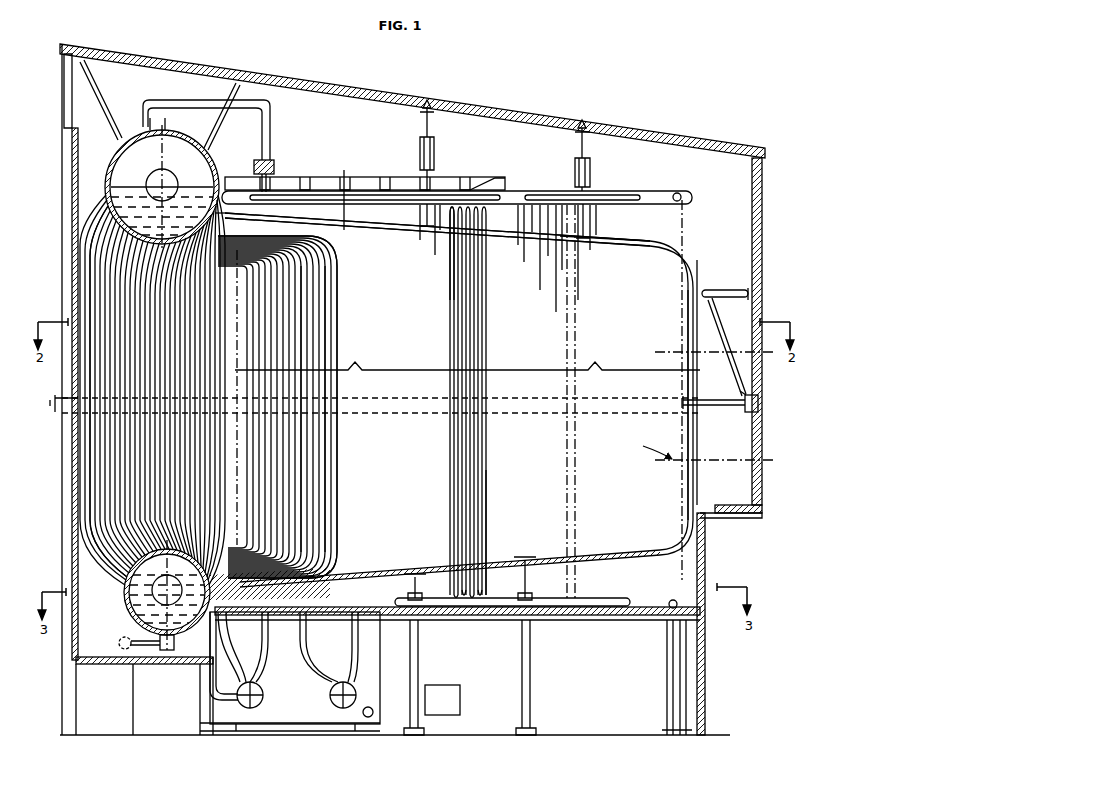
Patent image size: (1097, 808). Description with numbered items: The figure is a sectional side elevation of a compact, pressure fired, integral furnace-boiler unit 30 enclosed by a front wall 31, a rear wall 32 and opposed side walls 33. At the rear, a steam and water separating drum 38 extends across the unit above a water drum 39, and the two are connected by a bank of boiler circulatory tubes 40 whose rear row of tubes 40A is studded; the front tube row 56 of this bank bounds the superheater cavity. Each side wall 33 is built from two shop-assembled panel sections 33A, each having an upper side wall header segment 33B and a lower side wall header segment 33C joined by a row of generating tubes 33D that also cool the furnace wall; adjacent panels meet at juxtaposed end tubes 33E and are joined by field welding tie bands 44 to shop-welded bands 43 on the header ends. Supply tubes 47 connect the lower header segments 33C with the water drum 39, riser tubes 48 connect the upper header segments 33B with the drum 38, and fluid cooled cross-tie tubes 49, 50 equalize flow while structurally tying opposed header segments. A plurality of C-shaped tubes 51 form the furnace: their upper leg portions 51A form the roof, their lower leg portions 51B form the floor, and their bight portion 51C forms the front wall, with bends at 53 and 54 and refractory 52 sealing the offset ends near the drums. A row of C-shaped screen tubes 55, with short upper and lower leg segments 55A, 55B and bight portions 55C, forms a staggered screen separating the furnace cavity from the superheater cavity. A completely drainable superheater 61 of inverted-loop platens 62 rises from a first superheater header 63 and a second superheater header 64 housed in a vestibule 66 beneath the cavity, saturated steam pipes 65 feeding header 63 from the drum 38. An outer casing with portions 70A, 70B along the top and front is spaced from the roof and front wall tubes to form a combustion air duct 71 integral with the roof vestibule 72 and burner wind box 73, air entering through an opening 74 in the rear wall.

The integral furnace-boiler unit 30 is at (714, 553).
The front wall 31 is at (692, 446).
The rear wall 32 is at (72, 460).
The side wall 33 is at (490, 442).
The panel section 33A is at (359, 368).
The upper side wall header segment 33B is at (692, 197).
The lower side wall header segment 33C is at (622, 605).
The generating tubes 33D is at (490, 484).
The end tubes 33E is at (468, 303).
The steam and water separating drum 38 is at (112, 177).
The water drum 39 is at (130, 613).
The boiler circulatory tube bank 40 is at (88, 528).
The rear row of tubes 40A is at (78, 243).
The bands 43 is at (502, 193).
The tie bands 44 is at (482, 186).
The supply tubes 47 is at (563, 615).
The riser tubes 48 is at (458, 181).
The cross-tie tube 49 is at (668, 610).
The cross-tie tube 50 is at (674, 193).
The C-shaped tubes 51 is at (633, 250).
The upper leg portion 51A is at (597, 243).
The lower leg portion 51B is at (613, 553).
The bight portion 51C is at (686, 381).
The refractory 52 is at (352, 214).
The bend 53 is at (693, 268).
The bend 54 is at (703, 530).
The screen tubes 55 is at (338, 303).
The upper leg segment 55A is at (258, 243).
The lower leg segment 55B is at (303, 563).
The bight portion 55C is at (331, 331).
The front tube row 56 is at (226, 310).
The superheater 61 is at (327, 433).
The platens 62 is at (308, 477).
The first superheater header 63 is at (256, 708).
The second superheater header 64 is at (338, 708).
The saturated steam pipes 65 is at (272, 118).
The vestibule 66 is at (352, 653).
The casing portion 70A is at (530, 105).
The casing portion 70B is at (763, 232).
The combustion air duct 71 is at (622, 150).
The roof vestibule 72 is at (360, 148).
The burner wind box 73 is at (720, 313).
The opening 74 is at (66, 90).